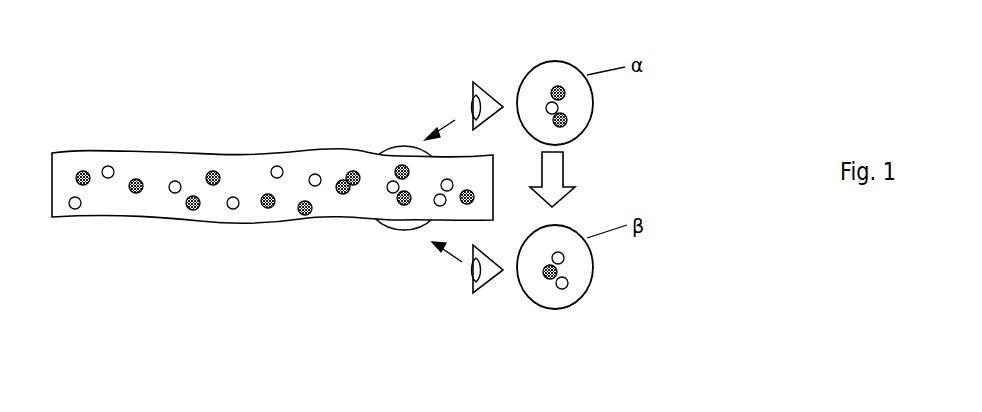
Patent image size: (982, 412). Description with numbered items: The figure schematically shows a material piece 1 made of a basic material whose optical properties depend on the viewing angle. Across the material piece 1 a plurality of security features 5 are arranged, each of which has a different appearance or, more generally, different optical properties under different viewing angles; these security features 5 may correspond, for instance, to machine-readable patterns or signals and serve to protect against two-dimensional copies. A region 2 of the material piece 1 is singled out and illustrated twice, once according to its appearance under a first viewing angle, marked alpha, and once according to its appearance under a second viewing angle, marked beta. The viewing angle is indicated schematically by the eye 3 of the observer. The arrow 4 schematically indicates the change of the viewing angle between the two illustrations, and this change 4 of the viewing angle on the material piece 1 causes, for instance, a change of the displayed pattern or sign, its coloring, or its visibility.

The material piece 1 is at (58, 187).
The region 2 is at (386, 150).
The eye 3 is at (481, 88).
The arrow 4 is at (557, 175).
The security features 5 is at (209, 174).